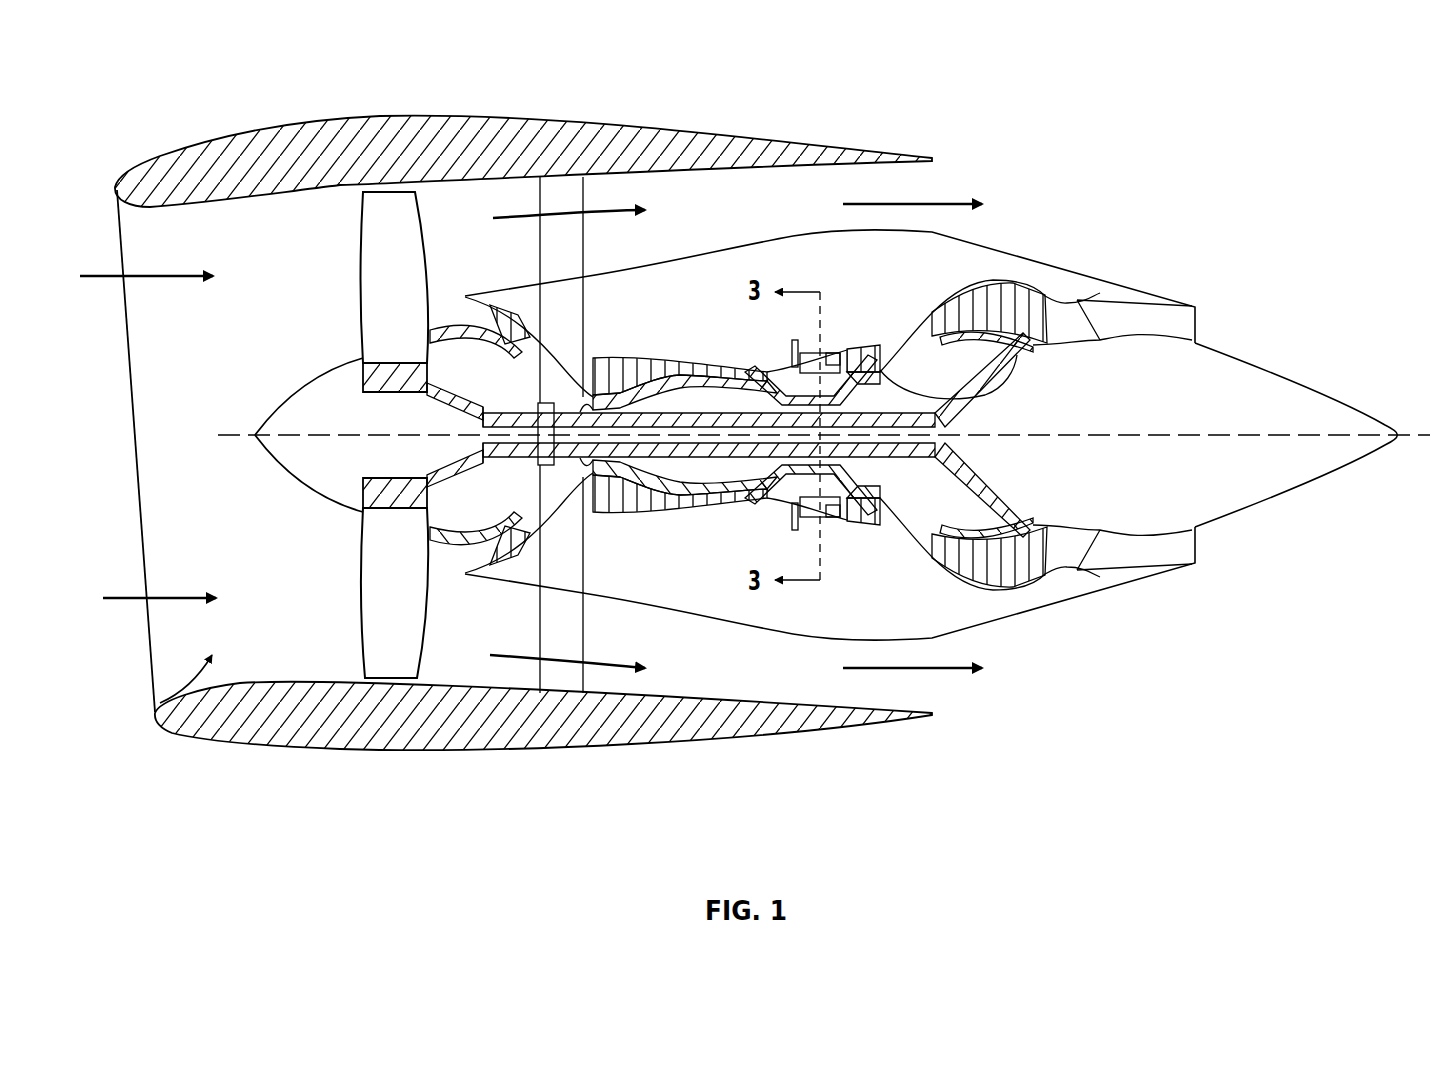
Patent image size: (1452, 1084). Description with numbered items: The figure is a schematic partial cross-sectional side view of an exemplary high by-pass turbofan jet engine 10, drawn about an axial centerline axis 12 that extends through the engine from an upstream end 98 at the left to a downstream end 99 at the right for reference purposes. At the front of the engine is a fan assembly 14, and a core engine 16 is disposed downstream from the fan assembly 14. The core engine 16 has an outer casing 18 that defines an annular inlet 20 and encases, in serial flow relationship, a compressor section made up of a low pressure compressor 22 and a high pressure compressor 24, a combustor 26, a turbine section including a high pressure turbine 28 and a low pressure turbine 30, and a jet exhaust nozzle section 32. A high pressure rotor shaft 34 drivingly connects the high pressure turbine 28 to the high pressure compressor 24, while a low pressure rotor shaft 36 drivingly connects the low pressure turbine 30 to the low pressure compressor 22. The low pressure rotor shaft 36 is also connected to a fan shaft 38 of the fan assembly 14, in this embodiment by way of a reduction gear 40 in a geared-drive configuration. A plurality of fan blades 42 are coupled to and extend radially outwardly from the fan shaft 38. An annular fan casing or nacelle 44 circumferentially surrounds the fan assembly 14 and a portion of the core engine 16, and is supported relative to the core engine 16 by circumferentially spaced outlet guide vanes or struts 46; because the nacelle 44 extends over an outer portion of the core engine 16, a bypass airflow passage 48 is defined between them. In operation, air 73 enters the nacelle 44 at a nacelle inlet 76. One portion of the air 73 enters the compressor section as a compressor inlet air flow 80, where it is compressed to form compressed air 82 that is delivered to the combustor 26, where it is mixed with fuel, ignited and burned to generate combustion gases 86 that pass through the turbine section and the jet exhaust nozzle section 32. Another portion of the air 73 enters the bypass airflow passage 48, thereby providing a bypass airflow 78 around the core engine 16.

The high by-pass turbofan jet engine 10 is at (1110, 118).
The axial centerline axis 12 is at (1150, 435).
The fan assembly 14 is at (455, 224).
The core engine 16 is at (795, 236).
The outer casing 18 is at (762, 625).
The annular inlet 20 is at (448, 572).
The low pressure compressor 22 is at (510, 525).
The high pressure compressor 24 is at (618, 505).
The combustor 26 is at (805, 520).
The high pressure turbine 28 is at (880, 520).
The low pressure turbine 30 is at (1020, 592).
The jet exhaust nozzle section 32 is at (1102, 562).
The high pressure rotor shaft 34 is at (890, 400).
The low pressure rotor shaft 36 is at (968, 385).
The fan shaft 38 is at (434, 396).
The reduction gear 40 is at (540, 400).
The fan blades 42 is at (368, 280).
The nacelle 44 is at (368, 118).
The outlet guide vanes 46 is at (569, 193).
The bypass airflow passage 48 is at (731, 222).
The air 73 is at (165, 272).
The nacelle inlet 76 is at (160, 700).
The bypass airflow 78 is at (595, 215).
The compressor inlet air flow 80 is at (512, 324).
The compressed air 82 is at (658, 373).
The combustion gases 86 is at (930, 313).
The upstream end 98 is at (118, 449).
The downstream end 99 is at (1422, 492).